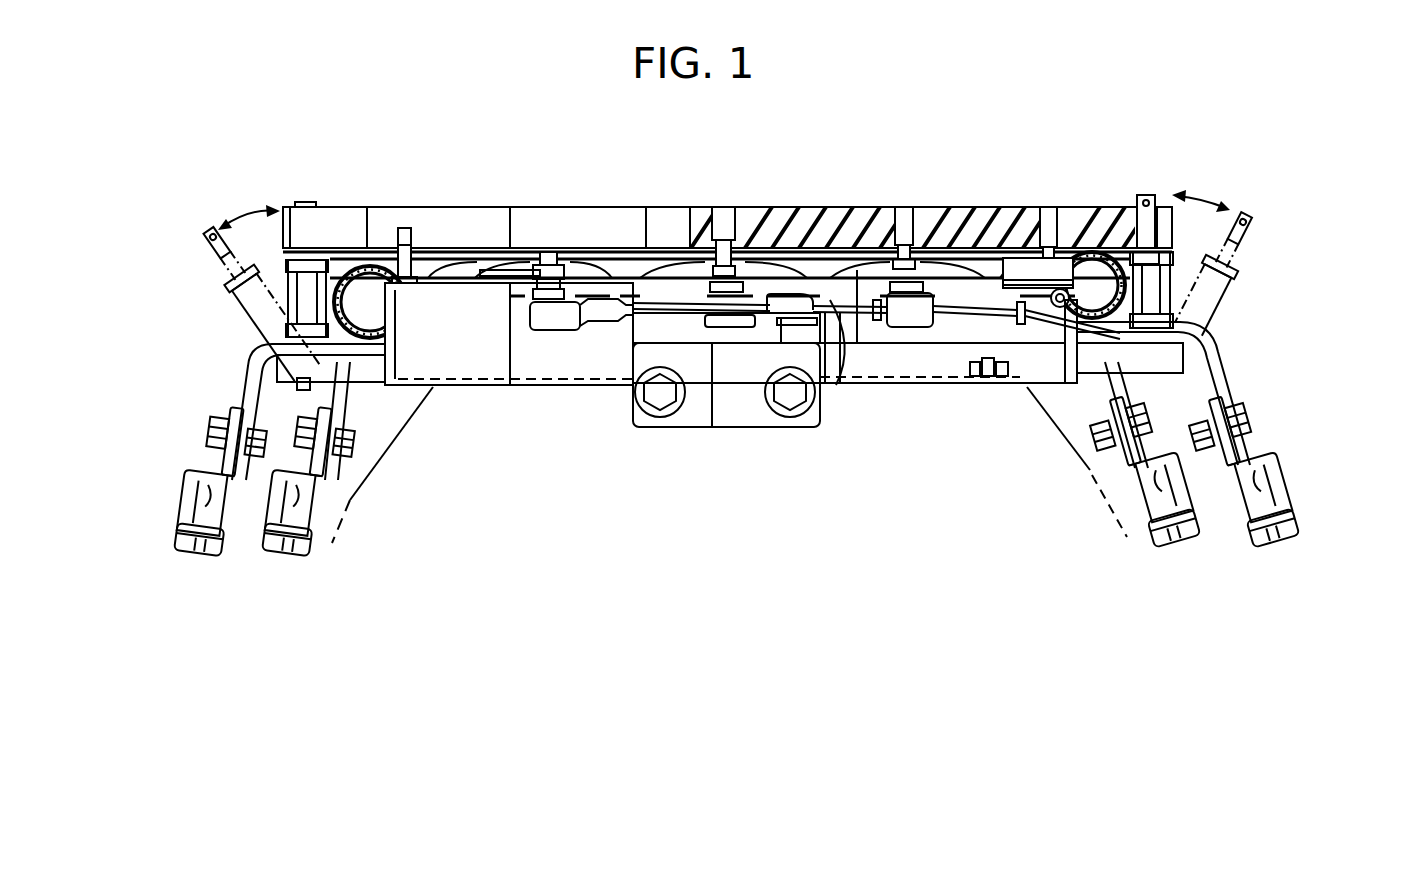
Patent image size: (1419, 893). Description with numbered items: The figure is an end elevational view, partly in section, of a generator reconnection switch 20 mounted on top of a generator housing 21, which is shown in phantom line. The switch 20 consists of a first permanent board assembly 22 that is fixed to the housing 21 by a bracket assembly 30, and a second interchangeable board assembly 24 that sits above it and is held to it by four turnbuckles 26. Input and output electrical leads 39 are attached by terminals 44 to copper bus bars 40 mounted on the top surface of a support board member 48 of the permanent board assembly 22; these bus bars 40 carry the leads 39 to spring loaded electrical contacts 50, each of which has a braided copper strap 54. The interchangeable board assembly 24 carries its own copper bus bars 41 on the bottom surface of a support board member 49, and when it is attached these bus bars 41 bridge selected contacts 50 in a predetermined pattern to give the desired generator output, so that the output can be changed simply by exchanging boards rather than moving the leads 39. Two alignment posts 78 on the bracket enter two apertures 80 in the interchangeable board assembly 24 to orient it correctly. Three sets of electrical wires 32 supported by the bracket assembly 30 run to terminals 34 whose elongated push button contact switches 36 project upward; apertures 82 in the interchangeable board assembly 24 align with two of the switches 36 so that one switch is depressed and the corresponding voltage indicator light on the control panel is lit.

The reconnection switch 20 is at (995, 85).
The generator housing 21 is at (373, 473).
The first permanent board assembly 22 is at (367, 392).
The second interchangeable board assembly 24 is at (621, 200).
The turnbuckles 26 is at (212, 305).
The bracket assembly 30 is at (660, 433).
The electrical wires 32 is at (837, 320).
The terminals 34 is at (587, 323).
The push button contact switches 36 is at (903, 200).
The input and output electrical leads 39 is at (182, 543).
The bus bars 40 is at (245, 368).
The bus bars 41 is at (837, 200).
The terminals 44 is at (185, 490).
The support board member 48 is at (1208, 380).
The support board member 49 is at (503, 206).
The spring loaded electrical contacts 50 is at (385, 255).
The braided copper strap 54 is at (353, 268).
The alignment posts 78 is at (1030, 217).
The apertures 80 is at (1048, 198).
The apertures 82 is at (727, 200).